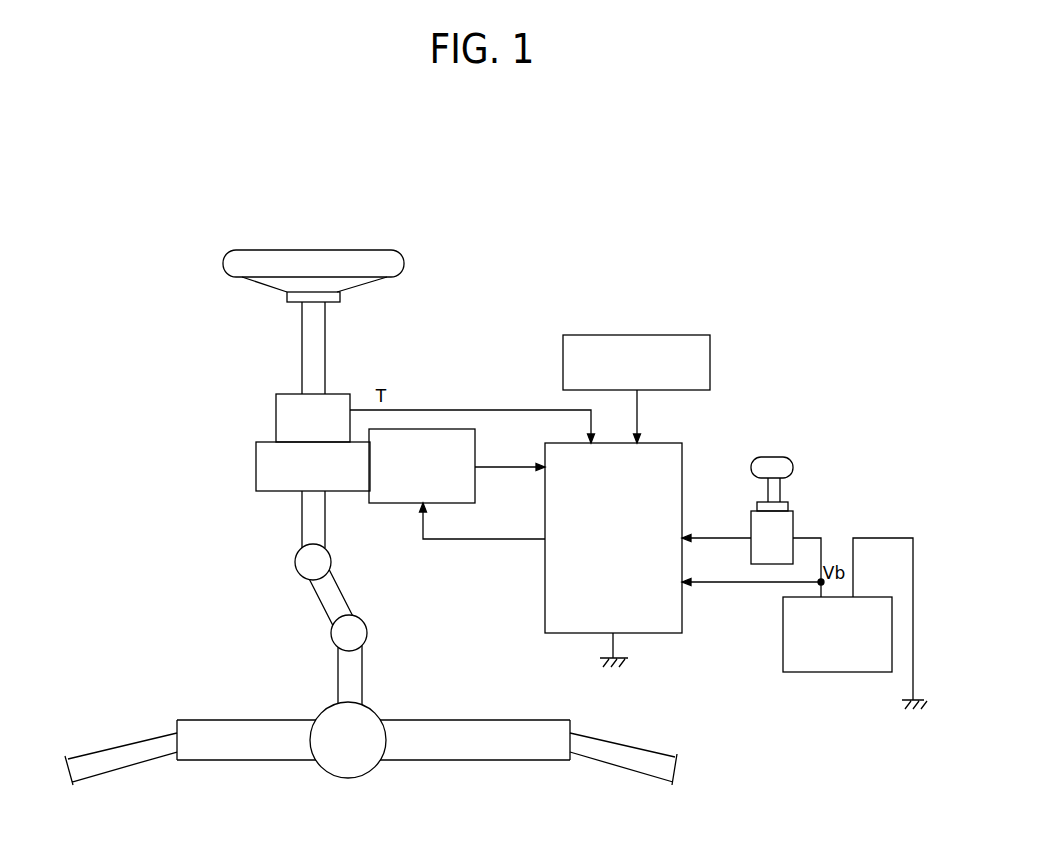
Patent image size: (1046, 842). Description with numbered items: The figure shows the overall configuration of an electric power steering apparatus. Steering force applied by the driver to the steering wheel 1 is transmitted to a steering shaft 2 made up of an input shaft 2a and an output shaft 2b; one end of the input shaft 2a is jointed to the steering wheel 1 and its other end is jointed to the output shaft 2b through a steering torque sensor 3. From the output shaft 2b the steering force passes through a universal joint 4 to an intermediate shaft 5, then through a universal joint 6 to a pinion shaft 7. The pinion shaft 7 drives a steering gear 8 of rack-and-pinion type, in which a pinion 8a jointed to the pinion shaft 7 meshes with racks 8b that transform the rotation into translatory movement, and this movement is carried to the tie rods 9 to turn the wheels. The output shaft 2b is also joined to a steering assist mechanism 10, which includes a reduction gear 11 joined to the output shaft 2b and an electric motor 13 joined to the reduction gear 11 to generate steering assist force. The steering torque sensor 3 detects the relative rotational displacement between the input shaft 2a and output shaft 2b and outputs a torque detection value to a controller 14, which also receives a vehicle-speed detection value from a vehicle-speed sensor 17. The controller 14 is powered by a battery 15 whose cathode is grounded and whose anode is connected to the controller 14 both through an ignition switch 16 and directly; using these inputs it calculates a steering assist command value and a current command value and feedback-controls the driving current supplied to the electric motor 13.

The steering wheel 1 is at (330, 246).
The steering shaft 2 is at (274, 420).
The input shaft 2a is at (305, 370).
The output shaft 2b is at (302, 527).
The steering torque sensor 3 is at (276, 414).
The universal joint 4 is at (295, 558).
The intermediate shaft 5 is at (330, 600).
The universal joint 6 is at (333, 630).
The pinion shaft 7 is at (340, 665).
The steering gear 8 is at (373, 715).
The pinion 8a is at (318, 718).
The racks 8b is at (483, 720).
The tie rods 9 is at (133, 740).
The steering assist mechanism 10 is at (348, 448).
The reduction gear 11 is at (256, 465).
The electric motor 13 is at (475, 452).
The controller 14 is at (682, 456).
The battery 15 is at (838, 672).
The ignition switch 16 is at (793, 520).
The vehicle-speed sensor 17 is at (603, 335).